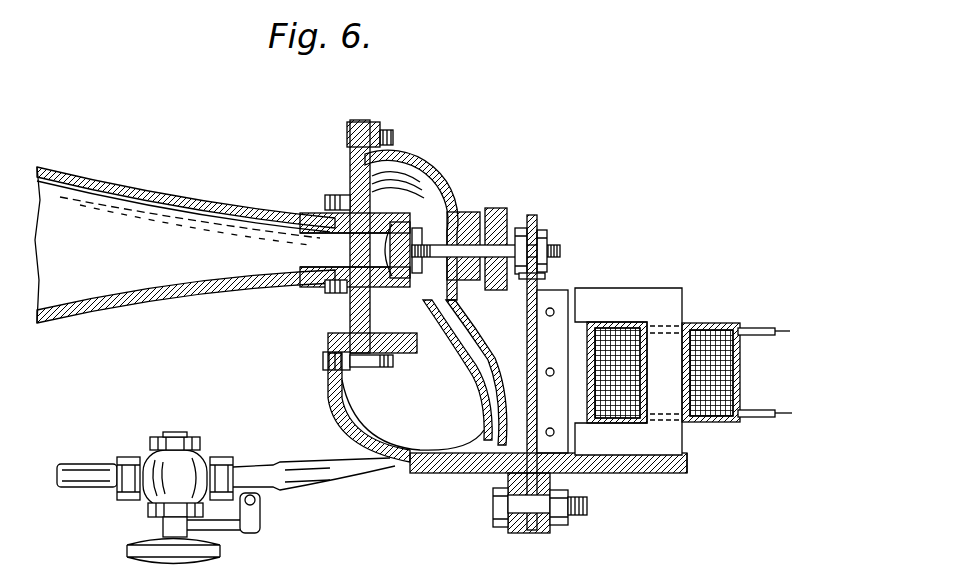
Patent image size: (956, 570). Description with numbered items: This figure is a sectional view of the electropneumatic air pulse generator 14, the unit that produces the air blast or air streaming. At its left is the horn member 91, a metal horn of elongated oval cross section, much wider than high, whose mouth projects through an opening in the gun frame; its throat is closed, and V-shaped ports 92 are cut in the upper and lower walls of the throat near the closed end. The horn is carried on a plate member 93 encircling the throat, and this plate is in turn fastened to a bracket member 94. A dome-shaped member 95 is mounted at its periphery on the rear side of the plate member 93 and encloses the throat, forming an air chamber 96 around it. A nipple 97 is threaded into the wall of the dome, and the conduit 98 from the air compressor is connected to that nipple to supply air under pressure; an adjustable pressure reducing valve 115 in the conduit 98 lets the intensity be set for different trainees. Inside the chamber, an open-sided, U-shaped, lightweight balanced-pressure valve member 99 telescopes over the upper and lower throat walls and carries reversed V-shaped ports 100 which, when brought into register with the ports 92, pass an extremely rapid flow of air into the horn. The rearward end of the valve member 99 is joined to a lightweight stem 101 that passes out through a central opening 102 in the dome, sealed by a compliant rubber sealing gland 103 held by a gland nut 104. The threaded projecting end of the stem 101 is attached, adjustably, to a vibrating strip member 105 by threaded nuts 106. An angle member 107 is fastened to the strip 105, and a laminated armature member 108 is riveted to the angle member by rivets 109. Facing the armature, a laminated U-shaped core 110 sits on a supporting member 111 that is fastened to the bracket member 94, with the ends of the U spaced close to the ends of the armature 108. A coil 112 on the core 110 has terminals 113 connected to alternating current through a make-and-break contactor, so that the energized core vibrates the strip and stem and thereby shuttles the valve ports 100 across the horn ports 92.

The electropneumatic air pulse generator 14 is at (238, 194).
The horn member 91 is at (160, 197).
The V-shaped ports 92 is at (388, 240).
The plate member 93 is at (350, 168).
The bracket member 94 is at (442, 470).
The dome-shaped member 95 is at (414, 205).
The air chamber 96 is at (398, 188).
The nipple 97 is at (432, 352).
The conduit 98 is at (362, 478).
The balanced-pressure valve member 99 is at (422, 228).
The ports 100 is at (382, 207).
The stem 101 is at (558, 250).
The central opening 102 is at (458, 216).
The compliant sealing gland 103 is at (480, 204).
The gland nut 104 is at (524, 215).
The vibrating strip member 105 is at (532, 280).
The threaded nuts 106 is at (541, 228).
The angle member 107 is at (565, 290).
The armature member 108 is at (615, 475).
The rivets 109 is at (543, 432).
The U-shaped core 110 is at (684, 298).
The supporting member 111 is at (679, 474).
The coil 112 is at (720, 325).
The terminals 113 is at (763, 410).
The adjustable pressure reducing valve 115 is at (201, 460).